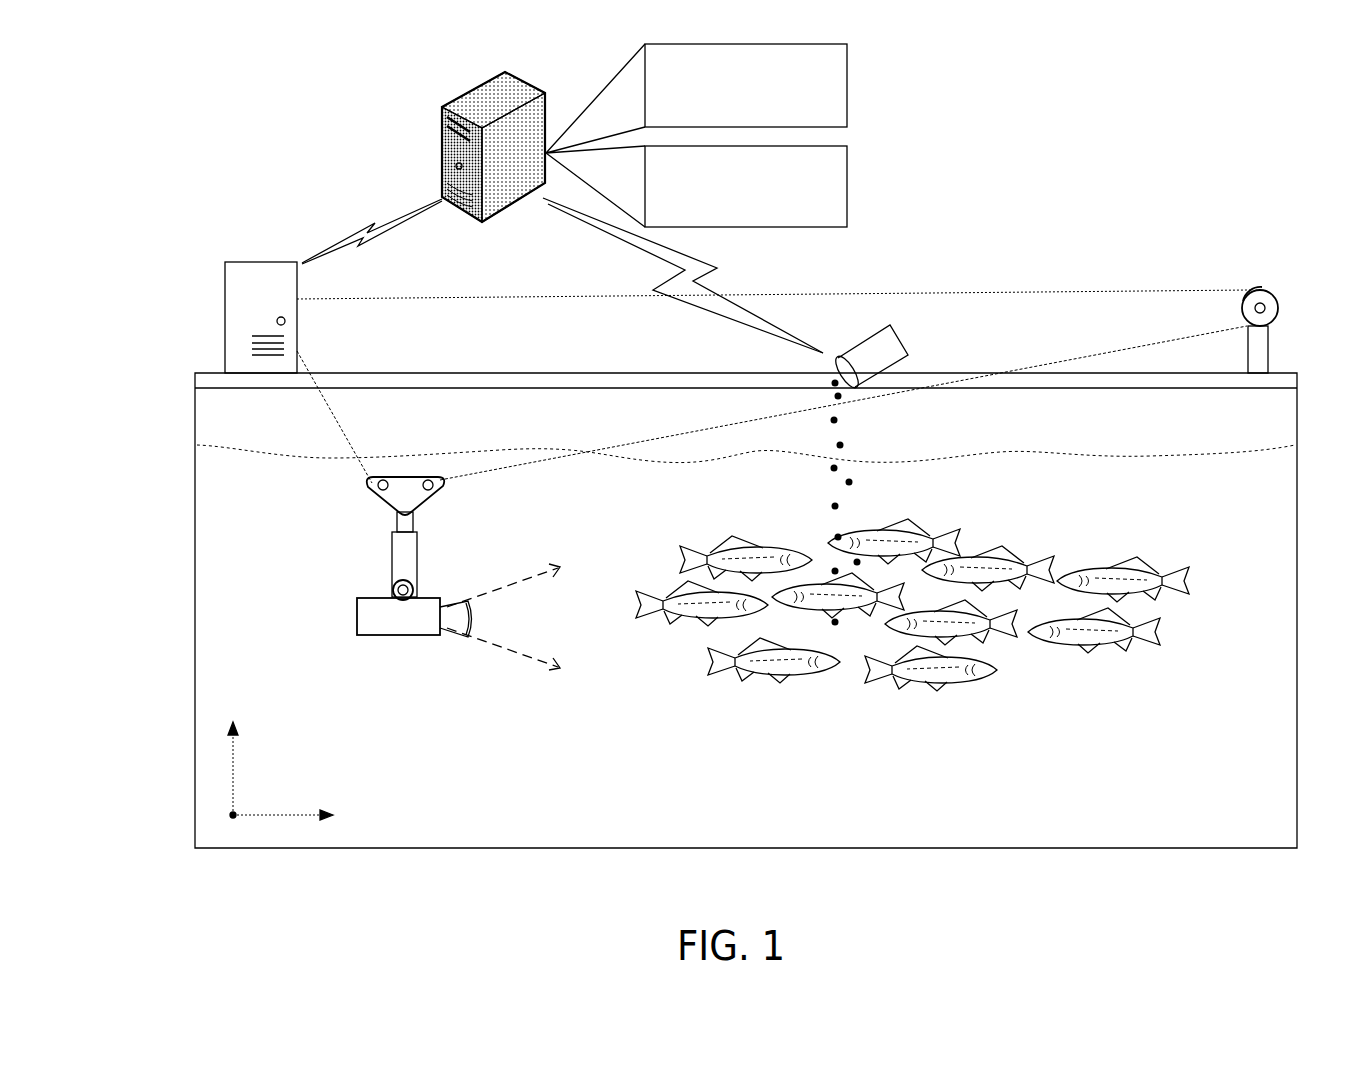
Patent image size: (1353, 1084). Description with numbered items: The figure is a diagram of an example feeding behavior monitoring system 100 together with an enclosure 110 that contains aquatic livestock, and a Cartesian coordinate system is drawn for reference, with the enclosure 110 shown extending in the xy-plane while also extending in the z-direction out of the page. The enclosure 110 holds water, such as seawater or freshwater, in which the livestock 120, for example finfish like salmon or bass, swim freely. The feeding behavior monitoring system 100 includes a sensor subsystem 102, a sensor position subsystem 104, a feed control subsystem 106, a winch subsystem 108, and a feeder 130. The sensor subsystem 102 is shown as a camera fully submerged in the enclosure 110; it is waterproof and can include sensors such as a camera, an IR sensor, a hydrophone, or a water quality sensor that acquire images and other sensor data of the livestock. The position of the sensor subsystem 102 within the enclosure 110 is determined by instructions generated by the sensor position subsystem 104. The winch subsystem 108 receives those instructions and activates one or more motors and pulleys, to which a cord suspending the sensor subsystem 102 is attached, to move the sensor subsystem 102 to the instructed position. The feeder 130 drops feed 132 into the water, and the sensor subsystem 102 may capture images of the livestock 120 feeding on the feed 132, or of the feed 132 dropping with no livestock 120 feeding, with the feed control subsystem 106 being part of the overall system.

The feeding behavior monitoring system 100 is at (251, 129).
The sensor subsystem 102 is at (356, 607).
The sensor position subsystem 104 is at (746, 85).
The feed control subsystem 106 is at (746, 186).
The winch subsystem 108 is at (737, 372).
The enclosure 110 is at (196, 520).
The livestock 120 is at (1137, 558).
The feeder 130 is at (908, 343).
The feed 132 is at (857, 432).